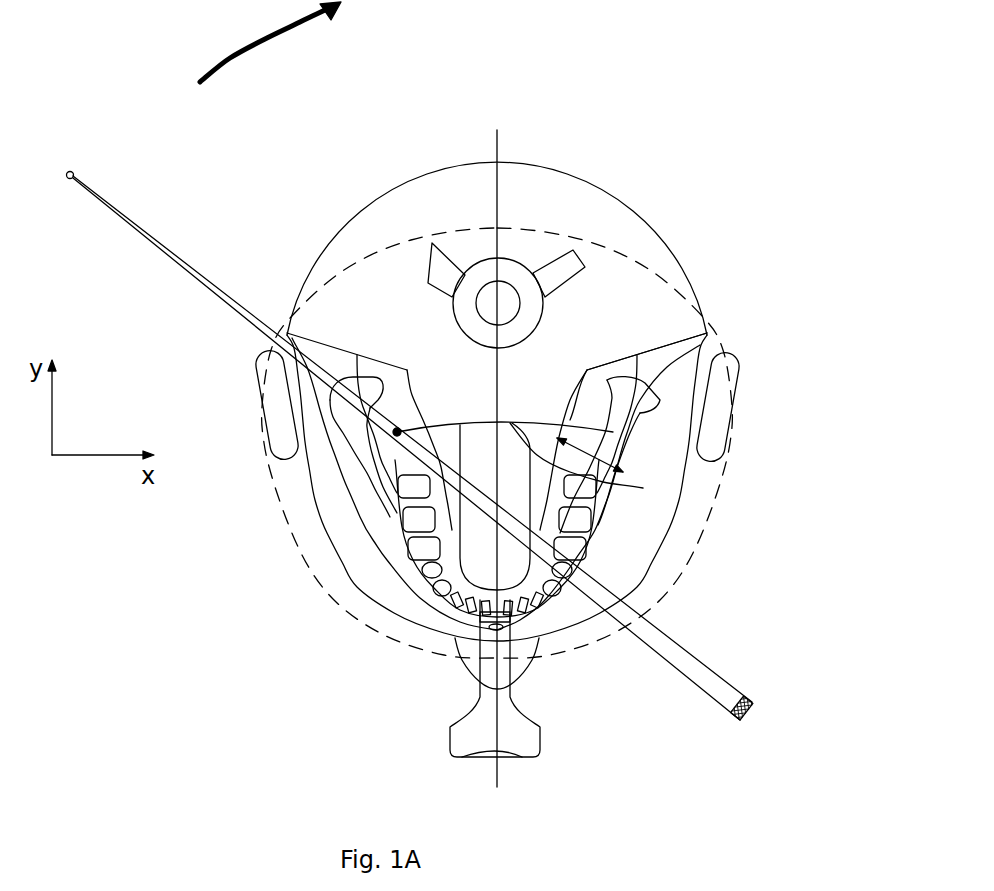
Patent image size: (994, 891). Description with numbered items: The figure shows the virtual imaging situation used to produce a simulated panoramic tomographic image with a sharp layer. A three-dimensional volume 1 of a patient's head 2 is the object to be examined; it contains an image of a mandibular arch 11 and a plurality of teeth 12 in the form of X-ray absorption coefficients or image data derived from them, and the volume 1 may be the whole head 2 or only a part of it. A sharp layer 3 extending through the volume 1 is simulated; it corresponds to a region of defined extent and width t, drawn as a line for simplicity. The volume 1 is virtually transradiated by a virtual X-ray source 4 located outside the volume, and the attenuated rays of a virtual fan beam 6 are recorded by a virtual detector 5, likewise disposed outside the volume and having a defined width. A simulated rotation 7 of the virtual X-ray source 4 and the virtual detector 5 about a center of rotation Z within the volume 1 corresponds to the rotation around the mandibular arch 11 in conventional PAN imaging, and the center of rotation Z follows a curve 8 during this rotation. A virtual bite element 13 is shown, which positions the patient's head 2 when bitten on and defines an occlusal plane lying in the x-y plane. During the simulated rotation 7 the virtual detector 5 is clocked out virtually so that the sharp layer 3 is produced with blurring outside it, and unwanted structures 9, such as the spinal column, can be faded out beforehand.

The 3D volume 1 is at (647, 267).
The patient's head 2 is at (640, 210).
The sharp layer 3 is at (637, 435).
The virtual X-ray source 4 is at (70, 172).
The virtual detector 5 is at (740, 692).
The virtual fan beam 6 is at (707, 680).
The simulated rotation 7 is at (260, 40).
The curve 8 is at (643, 488).
The unwanted structures 9 is at (513, 270).
The mandibular arch 11 is at (712, 345).
The teeth 12 is at (413, 520).
The virtual bite element 13 is at (510, 733).